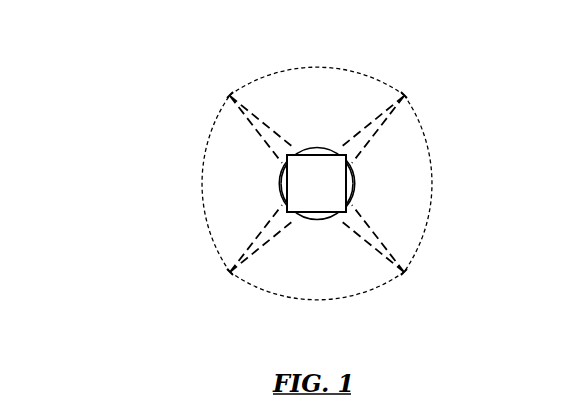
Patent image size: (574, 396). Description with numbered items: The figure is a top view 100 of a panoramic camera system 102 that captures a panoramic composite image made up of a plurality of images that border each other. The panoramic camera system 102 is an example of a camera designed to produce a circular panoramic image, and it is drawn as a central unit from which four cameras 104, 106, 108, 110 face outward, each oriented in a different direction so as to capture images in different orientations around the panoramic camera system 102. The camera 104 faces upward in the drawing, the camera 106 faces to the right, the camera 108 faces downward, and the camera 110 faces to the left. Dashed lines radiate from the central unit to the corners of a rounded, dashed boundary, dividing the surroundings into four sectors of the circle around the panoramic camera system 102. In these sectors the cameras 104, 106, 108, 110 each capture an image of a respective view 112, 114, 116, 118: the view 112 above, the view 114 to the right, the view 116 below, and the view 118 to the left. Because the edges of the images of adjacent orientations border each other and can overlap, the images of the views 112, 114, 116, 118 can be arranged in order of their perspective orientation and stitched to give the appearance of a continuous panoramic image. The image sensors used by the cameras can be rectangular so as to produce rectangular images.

The top view 100 is at (70, 59).
The panoramic camera system 102 is at (331, 191).
The camera 104 is at (315, 147).
The camera 106 is at (352, 183).
The camera 108 is at (317, 220).
The camera 110 is at (281, 183).
The view 112 is at (333, 68).
The view 114 is at (433, 168).
The view 116 is at (305, 299).
The view 118 is at (203, 200).